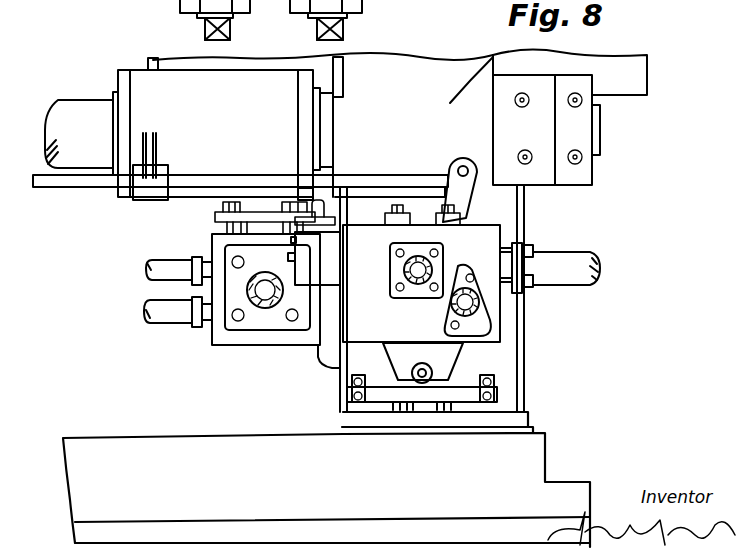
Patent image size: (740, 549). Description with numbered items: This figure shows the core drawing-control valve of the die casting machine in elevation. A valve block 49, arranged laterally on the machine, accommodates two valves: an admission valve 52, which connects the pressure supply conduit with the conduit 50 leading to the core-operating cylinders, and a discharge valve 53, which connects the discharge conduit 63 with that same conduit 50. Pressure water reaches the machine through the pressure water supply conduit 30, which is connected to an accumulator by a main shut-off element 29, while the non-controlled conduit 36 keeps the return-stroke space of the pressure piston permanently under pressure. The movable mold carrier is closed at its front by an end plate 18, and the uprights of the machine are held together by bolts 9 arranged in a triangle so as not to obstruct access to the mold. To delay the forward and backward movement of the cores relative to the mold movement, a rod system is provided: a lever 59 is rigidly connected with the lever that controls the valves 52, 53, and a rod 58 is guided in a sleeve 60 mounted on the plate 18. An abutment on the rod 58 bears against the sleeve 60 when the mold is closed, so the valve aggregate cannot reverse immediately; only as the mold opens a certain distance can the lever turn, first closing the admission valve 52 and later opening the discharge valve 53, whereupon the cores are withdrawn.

The bolts 9 is at (82, 110).
The end plate 18 is at (158, 67).
The sleeve 60 is at (160, 175).
The rod 58 is at (357, 175).
The lever 59 is at (451, 177).
The discharge valve 53 is at (387, 224).
The admission valve 52 is at (437, 223).
The pressure water supply conduit 30 is at (255, 226).
The non-controlled conduit 36 is at (163, 315).
The main shut-off element 29 is at (257, 322).
The conduit 50 is at (415, 282).
The discharge conduit 63 is at (478, 306).
The valve block 49 is at (475, 333).